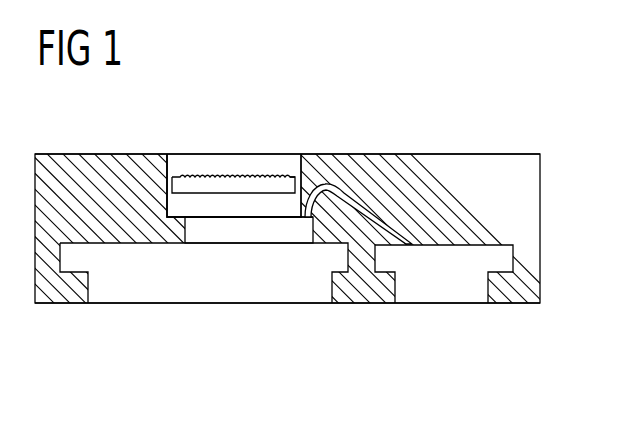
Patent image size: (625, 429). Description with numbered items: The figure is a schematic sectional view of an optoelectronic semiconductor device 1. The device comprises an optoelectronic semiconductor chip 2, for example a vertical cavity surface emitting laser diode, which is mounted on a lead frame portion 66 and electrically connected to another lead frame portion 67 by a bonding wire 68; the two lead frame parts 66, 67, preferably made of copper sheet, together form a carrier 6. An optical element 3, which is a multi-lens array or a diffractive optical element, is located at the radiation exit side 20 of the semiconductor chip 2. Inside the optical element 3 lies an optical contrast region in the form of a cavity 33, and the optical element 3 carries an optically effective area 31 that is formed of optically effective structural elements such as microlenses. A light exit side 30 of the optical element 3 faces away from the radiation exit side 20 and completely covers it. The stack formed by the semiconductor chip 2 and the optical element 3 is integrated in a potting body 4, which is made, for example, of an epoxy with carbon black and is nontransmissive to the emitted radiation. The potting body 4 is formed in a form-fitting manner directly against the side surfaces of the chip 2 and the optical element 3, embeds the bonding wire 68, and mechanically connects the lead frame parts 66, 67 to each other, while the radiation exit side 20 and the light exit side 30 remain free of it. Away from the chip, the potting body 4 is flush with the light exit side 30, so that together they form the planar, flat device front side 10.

The optoelectronic semiconductor device 1 is at (433, 82).
The optoelectronic semiconductor chip 2 is at (202, 233).
The optical element 3 is at (180, 153).
The potting body 4 is at (530, 230).
The carrier 6 is at (447, 362).
The device front side 10 is at (467, 153).
The radiation exit side 20 is at (262, 220).
The light exit side 30 is at (220, 153).
The optically effective area 31 is at (275, 178).
The cavity 33 is at (215, 175).
The lead frame portion 66 is at (303, 292).
The lead frame portion 67 is at (445, 292).
The bonding wire 68 is at (343, 190).